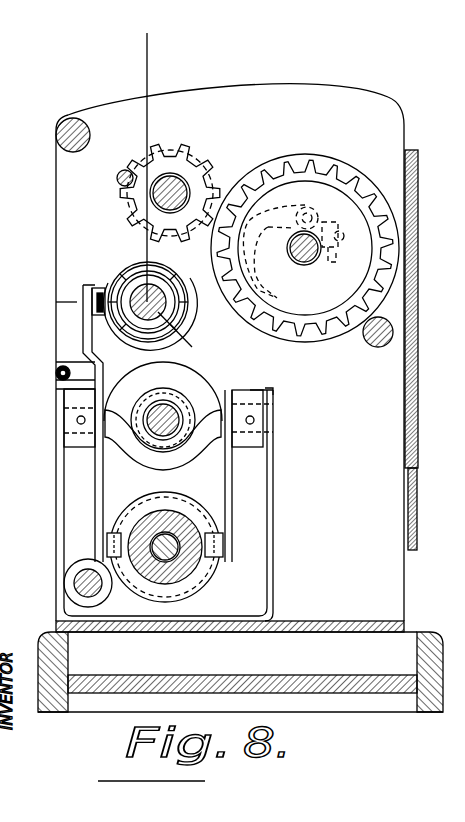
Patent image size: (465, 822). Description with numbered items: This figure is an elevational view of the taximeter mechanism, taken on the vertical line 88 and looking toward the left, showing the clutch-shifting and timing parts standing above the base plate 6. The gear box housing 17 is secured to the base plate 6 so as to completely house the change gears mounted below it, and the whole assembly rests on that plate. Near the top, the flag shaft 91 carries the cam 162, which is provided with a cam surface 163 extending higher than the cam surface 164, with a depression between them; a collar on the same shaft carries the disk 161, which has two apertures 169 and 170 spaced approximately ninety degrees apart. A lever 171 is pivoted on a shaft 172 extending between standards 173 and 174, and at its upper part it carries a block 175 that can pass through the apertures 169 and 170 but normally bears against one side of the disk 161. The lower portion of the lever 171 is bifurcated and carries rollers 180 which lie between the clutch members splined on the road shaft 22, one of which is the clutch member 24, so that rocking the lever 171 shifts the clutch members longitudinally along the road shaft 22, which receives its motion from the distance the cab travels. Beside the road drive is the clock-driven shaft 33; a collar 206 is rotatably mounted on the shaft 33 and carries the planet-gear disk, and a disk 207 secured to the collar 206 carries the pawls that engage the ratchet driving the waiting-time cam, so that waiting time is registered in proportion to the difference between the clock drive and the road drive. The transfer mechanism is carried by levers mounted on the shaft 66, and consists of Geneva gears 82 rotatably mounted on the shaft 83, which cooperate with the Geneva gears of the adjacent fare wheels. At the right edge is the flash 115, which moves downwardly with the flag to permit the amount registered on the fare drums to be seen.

The base plate 6 is at (322, 621).
The gear box housing 17 is at (143, 688).
The road shaft 22 is at (170, 537).
The clutch member 24 is at (128, 506).
The shaft 33 is at (178, 413).
The shaft 66 is at (74, 583).
The Geneva gears 82 is at (192, 150).
The shaft 83 is at (140, 205).
The shaft axis line 88 is at (148, 55).
The flag shaft 91 is at (164, 313).
The flash 115 is at (405, 377).
The disk 161 is at (178, 355).
The cam 162 is at (136, 276).
The cam surface 163 is at (185, 320).
The cam surface 164 is at (112, 290).
The aperture 169 is at (113, 296).
The aperture 170 is at (178, 258).
The lever 171 is at (83, 350).
The shaft 172 is at (120, 415).
The standard 173 is at (62, 498).
The standard 174 is at (274, 492).
The block 175 is at (92, 295).
The rollers 180 is at (222, 573).
The collar 206 is at (167, 428).
The disk 207 is at (186, 372).